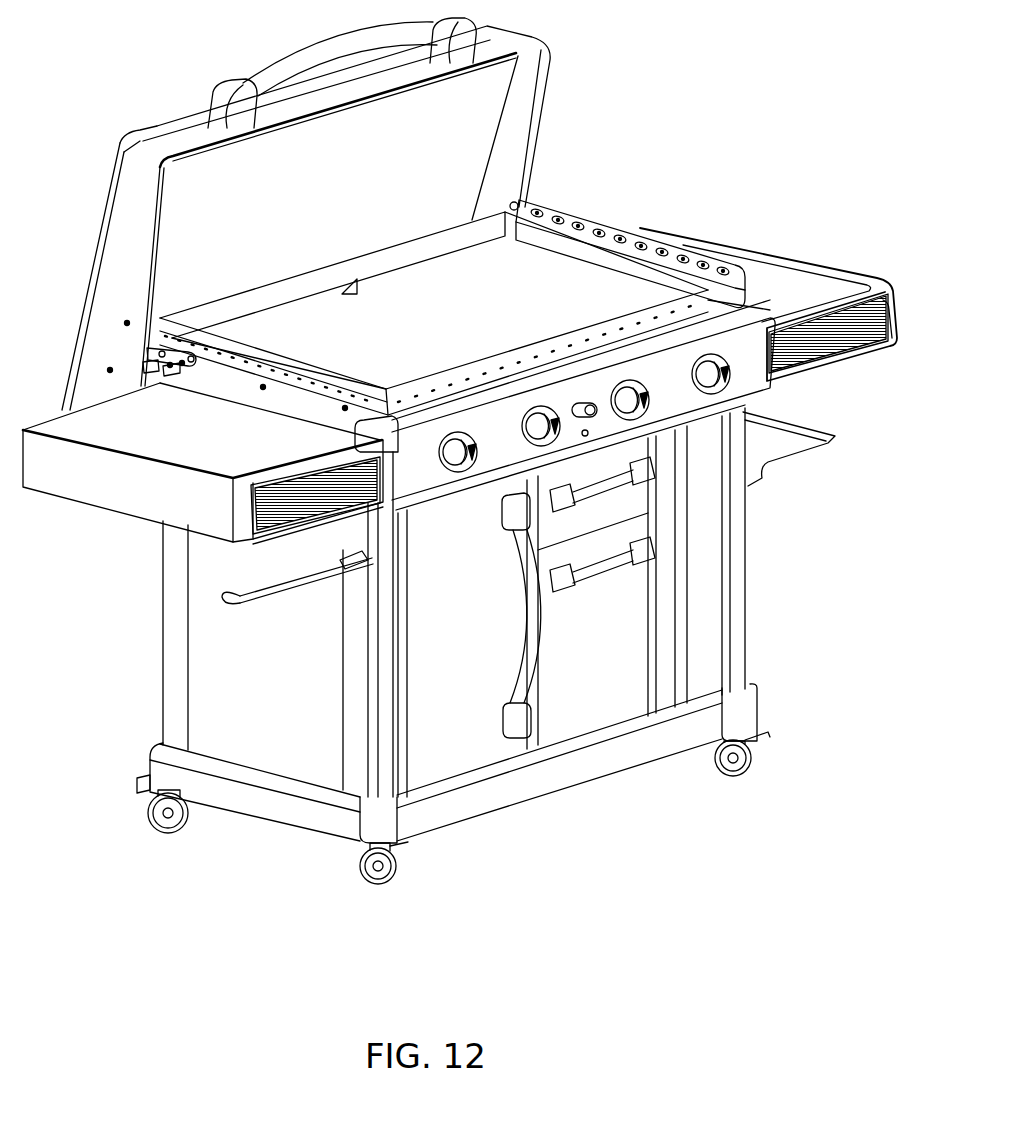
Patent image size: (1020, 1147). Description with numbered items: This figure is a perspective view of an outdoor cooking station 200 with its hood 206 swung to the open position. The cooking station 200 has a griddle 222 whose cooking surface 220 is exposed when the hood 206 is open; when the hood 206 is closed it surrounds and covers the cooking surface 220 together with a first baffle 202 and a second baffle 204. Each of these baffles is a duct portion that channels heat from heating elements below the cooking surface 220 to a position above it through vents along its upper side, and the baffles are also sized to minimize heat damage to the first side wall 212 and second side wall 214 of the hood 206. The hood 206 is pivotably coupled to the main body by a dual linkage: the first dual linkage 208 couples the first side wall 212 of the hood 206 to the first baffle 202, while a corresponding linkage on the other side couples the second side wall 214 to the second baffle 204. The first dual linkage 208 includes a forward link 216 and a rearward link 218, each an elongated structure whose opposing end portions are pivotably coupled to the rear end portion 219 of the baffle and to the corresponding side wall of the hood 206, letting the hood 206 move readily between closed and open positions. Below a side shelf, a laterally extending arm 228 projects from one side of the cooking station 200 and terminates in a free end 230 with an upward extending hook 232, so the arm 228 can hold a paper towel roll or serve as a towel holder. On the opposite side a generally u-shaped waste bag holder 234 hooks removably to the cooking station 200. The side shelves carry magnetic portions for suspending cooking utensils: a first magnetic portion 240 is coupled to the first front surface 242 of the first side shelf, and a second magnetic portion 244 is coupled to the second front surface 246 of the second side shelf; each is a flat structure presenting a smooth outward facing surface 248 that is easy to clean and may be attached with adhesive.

The outdoor cooking station 200 is at (771, 114).
The first baffle 202 is at (236, 380).
The second baffle 204 is at (641, 221).
The hood 206 is at (560, 100).
The first dual linkage 208 is at (215, 343).
The first side wall 212 is at (97, 347).
The second side wall 214 is at (514, 163).
The forward link 216 is at (179, 351).
The rearward link 218 is at (153, 344).
The rear end portion 219 is at (172, 368).
The cooking surface 220 is at (453, 327).
The griddle 222 is at (427, 224).
The laterally extending arm 228 is at (287, 588).
The free end 230 is at (230, 582).
The upward extending hook 232 is at (221, 593).
The waste bag holder 234 is at (807, 448).
The first magnetic portion 240 is at (313, 530).
The first front surface 242 is at (305, 466).
The second magnetic portion 244 is at (877, 356).
The second front surface 246 is at (791, 362).
The smooth outward facing surface 248 is at (897, 298).